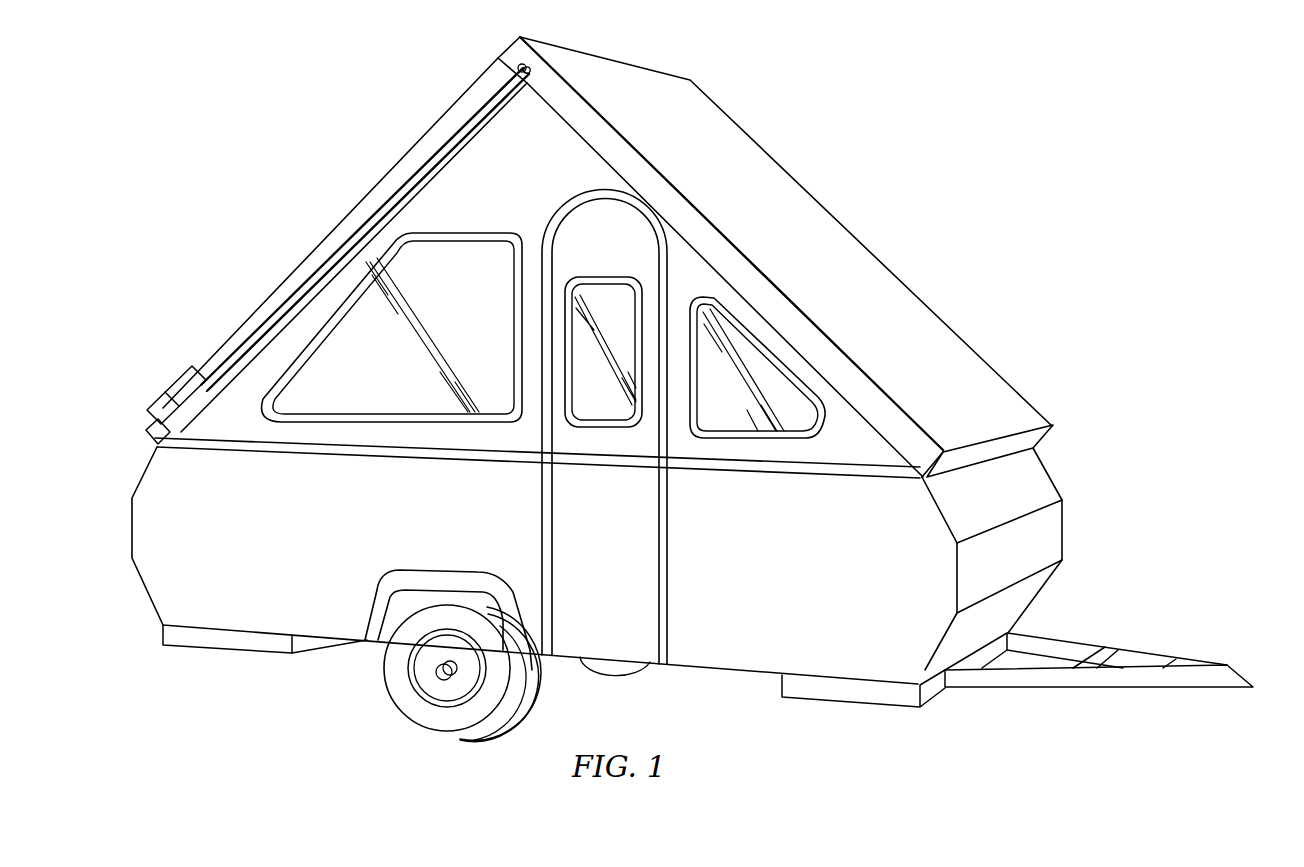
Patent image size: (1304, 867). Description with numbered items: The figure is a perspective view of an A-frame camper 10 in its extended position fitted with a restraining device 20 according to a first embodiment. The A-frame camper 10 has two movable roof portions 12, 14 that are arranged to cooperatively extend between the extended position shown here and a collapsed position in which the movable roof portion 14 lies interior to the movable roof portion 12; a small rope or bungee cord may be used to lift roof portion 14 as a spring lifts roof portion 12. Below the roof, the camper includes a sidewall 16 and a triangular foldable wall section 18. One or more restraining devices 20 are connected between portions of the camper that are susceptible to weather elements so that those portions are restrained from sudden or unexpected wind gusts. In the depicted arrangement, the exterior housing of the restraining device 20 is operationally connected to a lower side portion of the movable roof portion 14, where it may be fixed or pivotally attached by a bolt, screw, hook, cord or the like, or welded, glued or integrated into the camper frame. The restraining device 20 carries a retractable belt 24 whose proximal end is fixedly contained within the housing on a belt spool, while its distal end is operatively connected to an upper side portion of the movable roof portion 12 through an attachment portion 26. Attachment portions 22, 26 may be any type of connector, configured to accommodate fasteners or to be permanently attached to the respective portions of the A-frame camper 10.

The A-frame camper 10 is at (671, 389).
The movable roof portion 12 is at (890, 281).
The movable roof portion 14 is at (357, 209).
The sidewall 16 is at (435, 516).
The triangular foldable wall section 18 is at (516, 188).
The restraining device 20 is at (143, 392).
The attachment portion 22 is at (147, 434).
The retractable belt 24 is at (265, 323).
The attachment portion 26 is at (531, 70).